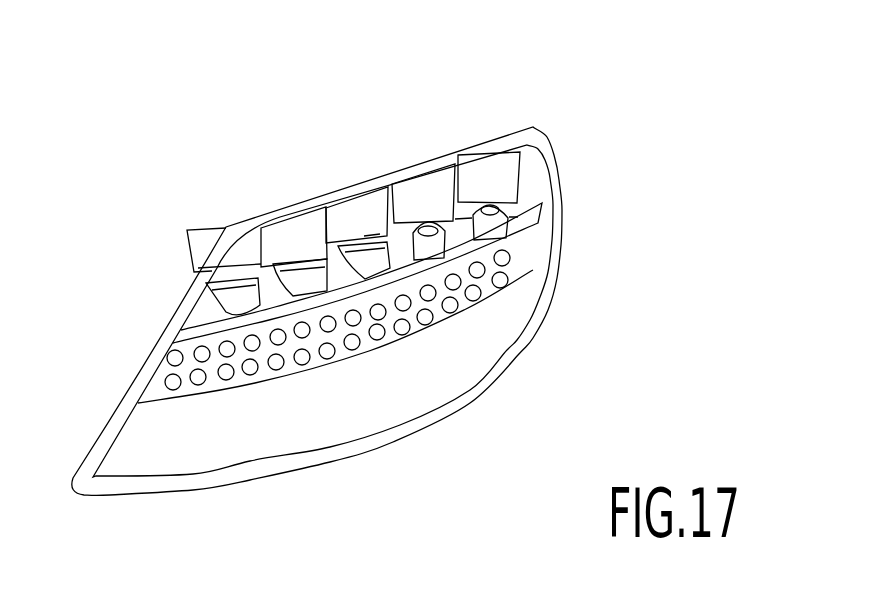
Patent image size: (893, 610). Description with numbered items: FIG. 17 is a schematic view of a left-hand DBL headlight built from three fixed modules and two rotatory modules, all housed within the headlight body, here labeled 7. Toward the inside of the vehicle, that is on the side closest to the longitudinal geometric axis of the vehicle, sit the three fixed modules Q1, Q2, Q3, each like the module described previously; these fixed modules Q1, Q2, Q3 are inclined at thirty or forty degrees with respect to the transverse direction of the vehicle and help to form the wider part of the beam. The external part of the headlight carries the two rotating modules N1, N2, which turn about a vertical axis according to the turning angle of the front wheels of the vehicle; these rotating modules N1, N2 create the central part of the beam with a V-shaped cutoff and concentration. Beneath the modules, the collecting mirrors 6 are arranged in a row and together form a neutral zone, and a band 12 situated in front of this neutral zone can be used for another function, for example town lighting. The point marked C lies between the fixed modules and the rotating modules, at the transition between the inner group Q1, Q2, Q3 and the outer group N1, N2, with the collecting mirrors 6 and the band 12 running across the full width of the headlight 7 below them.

The housing 7 is at (177, 310).
The band 12 is at (523, 257).
The collecting mirrors 6 is at (240, 304).
The fixed module Q1 is at (198, 234).
The fixed module Q2 is at (286, 235).
The fixed module Q3 is at (345, 220).
The central zone C is at (372, 233).
The rotating module N1 is at (425, 201).
The rotating module N2 is at (488, 182).